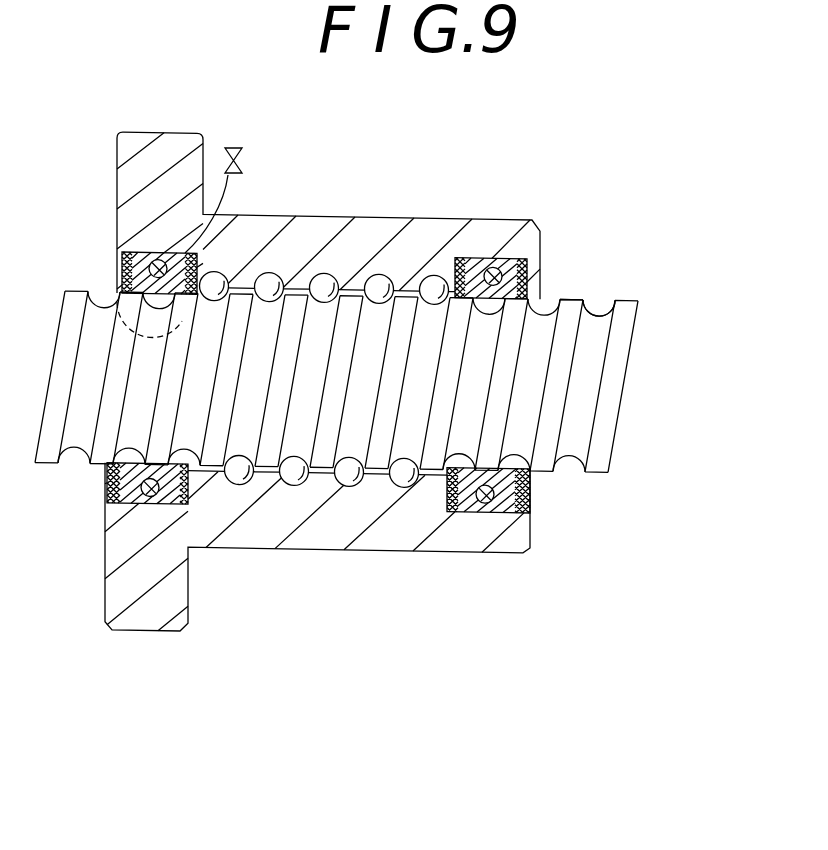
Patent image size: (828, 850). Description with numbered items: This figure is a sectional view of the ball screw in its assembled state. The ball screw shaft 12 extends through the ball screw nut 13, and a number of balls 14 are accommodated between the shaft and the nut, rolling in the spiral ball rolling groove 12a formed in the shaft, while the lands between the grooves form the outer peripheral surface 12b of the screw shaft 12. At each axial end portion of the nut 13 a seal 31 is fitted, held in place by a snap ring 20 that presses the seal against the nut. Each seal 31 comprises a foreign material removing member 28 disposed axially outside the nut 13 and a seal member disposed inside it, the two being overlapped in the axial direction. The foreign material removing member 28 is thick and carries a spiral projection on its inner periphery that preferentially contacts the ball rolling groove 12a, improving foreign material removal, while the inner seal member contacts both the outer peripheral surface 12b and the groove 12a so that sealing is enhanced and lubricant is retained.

The ball screw shaft 12 is at (597, 388).
The ball rolling groove 12a is at (604, 305).
The outer peripheral surface 12b is at (563, 303).
The ball screw nut 13 is at (385, 223).
The balls 14 is at (388, 282).
The snap ring 20 is at (120, 293).
The foreign material removing member 28 is at (524, 258).
The seal 31 is at (151, 241).